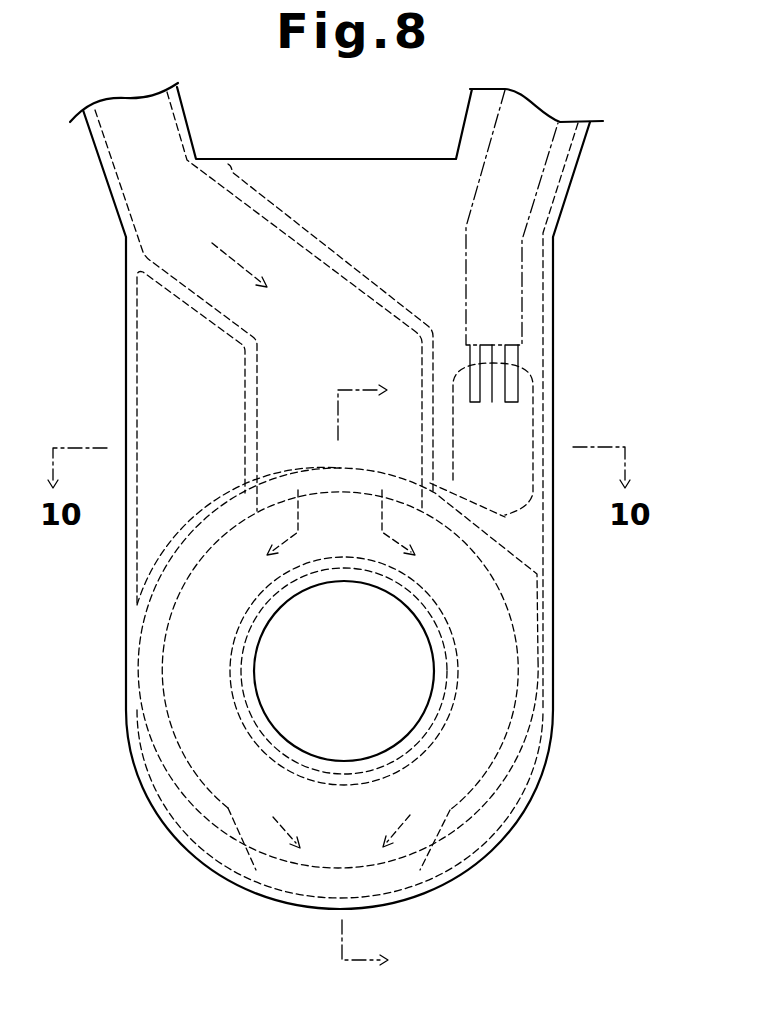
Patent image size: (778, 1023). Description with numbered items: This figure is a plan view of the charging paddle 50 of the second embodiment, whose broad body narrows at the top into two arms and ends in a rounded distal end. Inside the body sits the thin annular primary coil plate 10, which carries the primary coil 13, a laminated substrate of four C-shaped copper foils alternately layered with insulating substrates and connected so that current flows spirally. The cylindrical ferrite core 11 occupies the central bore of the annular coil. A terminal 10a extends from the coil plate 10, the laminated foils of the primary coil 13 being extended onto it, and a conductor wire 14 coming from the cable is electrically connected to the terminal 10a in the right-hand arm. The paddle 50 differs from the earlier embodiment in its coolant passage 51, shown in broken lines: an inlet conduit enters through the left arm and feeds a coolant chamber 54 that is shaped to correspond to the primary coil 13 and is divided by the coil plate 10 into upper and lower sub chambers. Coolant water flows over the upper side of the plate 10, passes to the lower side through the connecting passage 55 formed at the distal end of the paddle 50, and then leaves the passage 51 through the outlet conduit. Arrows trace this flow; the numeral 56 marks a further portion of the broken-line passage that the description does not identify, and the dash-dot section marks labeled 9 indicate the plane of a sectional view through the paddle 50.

The charging paddle 50 is at (700, 113).
The primary coil plate 10 is at (555, 685).
The terminal 10a is at (505, 520).
The ferrite core 11 is at (434, 672).
The primary coil 13 is at (549, 644).
The conductor wire 14 is at (513, 296).
The coolant passage 51 is at (333, 290).
The coolant chamber 54 is at (517, 718).
The connecting passage 55 is at (394, 880).
The side channel 56 is at (233, 497).
The section line 9- 9 is at (363, 674).